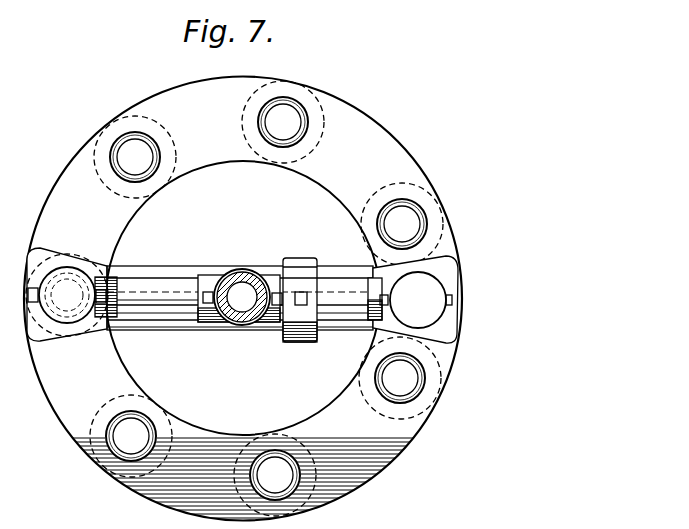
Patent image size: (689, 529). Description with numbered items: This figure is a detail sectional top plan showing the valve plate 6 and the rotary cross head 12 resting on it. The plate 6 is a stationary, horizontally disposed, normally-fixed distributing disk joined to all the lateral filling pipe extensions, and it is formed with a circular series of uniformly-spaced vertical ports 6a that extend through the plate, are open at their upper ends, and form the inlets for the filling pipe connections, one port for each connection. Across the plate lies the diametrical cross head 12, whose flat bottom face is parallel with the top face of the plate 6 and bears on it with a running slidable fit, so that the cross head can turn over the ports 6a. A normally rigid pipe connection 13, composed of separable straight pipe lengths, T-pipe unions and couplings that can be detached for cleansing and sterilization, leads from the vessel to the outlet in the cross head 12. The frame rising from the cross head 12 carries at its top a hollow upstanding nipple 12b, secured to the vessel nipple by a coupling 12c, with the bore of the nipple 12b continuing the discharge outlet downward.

The valve plate 6 is at (405, 433).
The vertical ports 6a is at (292, 120).
The cross head 12 is at (171, 270).
The hollow upstanding nipple 12b is at (243, 282).
The coupling 12c is at (232, 320).
The pipe connection 13 is at (152, 305).